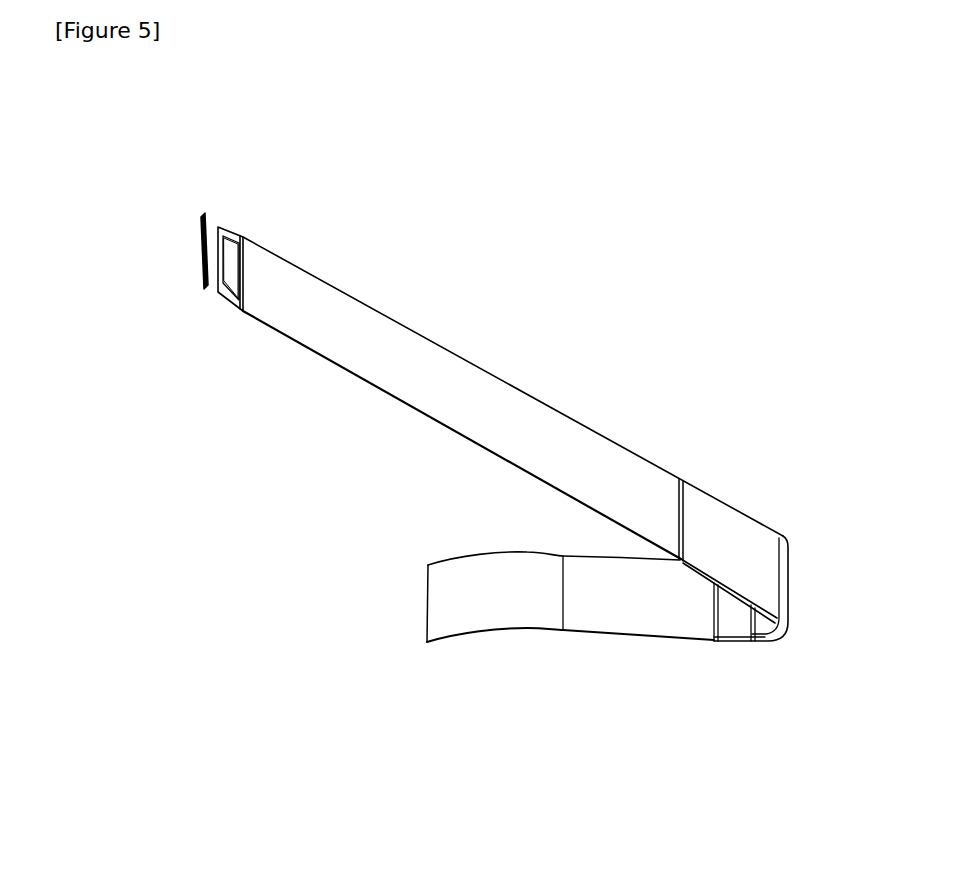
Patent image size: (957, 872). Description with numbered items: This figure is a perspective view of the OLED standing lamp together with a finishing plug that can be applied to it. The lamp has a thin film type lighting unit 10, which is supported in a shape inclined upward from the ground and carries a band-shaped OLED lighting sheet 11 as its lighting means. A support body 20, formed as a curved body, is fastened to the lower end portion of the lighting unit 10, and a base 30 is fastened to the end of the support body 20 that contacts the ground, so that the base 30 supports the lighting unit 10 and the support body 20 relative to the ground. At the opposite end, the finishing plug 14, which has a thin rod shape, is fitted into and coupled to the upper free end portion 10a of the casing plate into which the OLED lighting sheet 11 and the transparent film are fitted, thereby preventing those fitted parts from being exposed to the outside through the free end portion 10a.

The lighting unit 10 is at (466, 348).
The upper free end portion 10a is at (226, 300).
The OLED lighting sheet 11 is at (232, 262).
The finishing plug 14 is at (200, 267).
The support body 20 is at (750, 500).
The base 30 is at (599, 654).